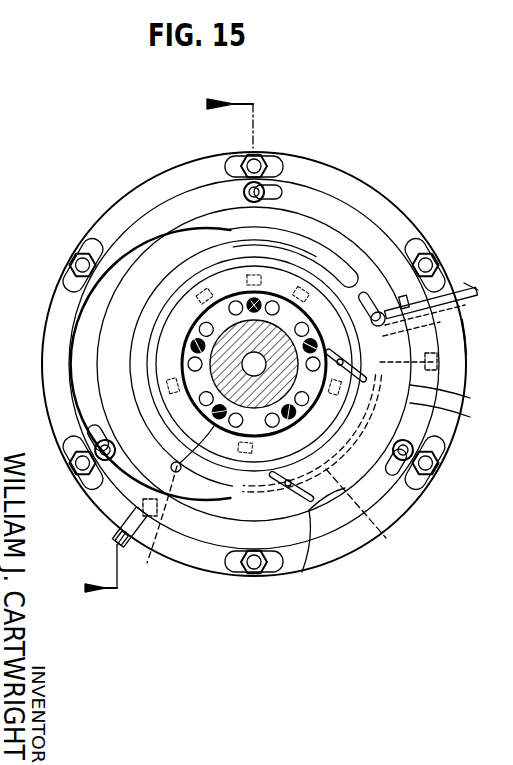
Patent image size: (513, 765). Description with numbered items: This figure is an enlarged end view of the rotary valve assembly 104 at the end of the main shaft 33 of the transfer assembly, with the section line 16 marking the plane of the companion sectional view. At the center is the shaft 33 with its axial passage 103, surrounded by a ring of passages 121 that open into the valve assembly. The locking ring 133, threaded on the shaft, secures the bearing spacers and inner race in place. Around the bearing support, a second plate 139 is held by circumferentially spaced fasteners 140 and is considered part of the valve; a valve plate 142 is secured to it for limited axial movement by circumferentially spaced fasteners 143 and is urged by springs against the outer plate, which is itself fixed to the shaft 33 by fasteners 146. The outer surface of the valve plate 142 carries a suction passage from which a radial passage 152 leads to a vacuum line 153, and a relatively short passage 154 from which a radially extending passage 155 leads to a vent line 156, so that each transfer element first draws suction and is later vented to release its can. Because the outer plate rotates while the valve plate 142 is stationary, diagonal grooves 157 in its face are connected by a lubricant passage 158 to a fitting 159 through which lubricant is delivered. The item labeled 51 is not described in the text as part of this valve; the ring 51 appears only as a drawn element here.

The section line 16- 16 is at (169, 357).
The main shaft 33 is at (217, 422).
The ring member 51 is at (117, 348).
The passage 103 is at (247, 371).
The rotary valve assembly 104 is at (392, 195).
The passage 121 is at (270, 312).
The locking ring 133 is at (283, 277).
The second plate 139 is at (341, 177).
The fasteners 140 is at (267, 158).
The valve plate 142 is at (160, 212).
The fasteners 143 is at (282, 190).
The fasteners 146 is at (175, 335).
The radial passage 152 is at (157, 531).
The vacuum line 153 is at (118, 526).
The short passage 154 is at (365, 288).
The radially extending passage 155 is at (474, 298).
The vent line 156 is at (470, 284).
The diagonal grooves 157 is at (463, 405).
The lubricant passage 158 is at (375, 516).
The fitting 159 is at (466, 338).